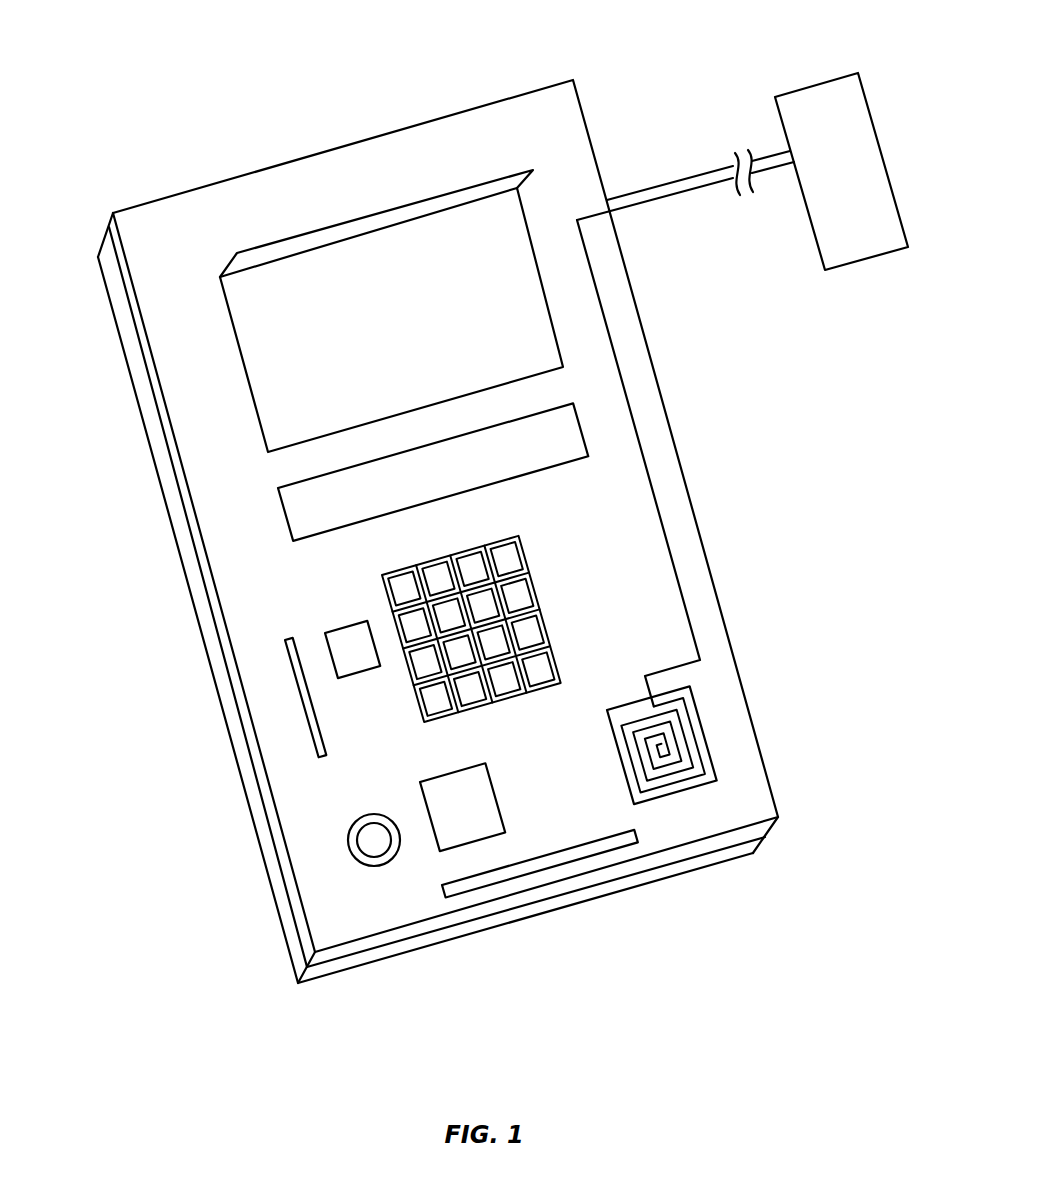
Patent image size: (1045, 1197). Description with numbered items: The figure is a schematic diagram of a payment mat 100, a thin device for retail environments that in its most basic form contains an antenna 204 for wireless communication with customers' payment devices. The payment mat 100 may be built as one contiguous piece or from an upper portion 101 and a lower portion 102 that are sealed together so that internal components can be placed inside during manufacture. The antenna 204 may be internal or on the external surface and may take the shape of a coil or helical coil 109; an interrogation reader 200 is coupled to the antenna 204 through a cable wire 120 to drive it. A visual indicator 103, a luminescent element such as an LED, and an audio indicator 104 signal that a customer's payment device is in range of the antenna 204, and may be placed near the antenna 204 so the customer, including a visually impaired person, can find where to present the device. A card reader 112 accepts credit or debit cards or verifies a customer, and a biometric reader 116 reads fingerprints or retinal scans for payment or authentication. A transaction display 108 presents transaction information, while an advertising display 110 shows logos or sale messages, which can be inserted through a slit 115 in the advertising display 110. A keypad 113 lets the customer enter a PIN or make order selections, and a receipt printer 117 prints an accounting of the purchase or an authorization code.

The payment mat 100 is at (464, 109).
The upper portion 101 is at (115, 243).
The lower portion 102 is at (118, 323).
The visual indicator 103 is at (434, 842).
The audio indicator 104 is at (348, 848).
The transaction display 108 is at (282, 507).
The coil or helical coil 109 is at (697, 703).
The advertising display 110 is at (255, 410).
The card reader 112 is at (303, 727).
The keypad 113 is at (533, 587).
The slit 115 is at (495, 178).
The biometric reader 116 is at (326, 645).
The receipt printer 117 is at (515, 878).
The cable wire 120 is at (700, 175).
The interrogation reader 200 is at (835, 93).
The antenna 204 is at (702, 742).